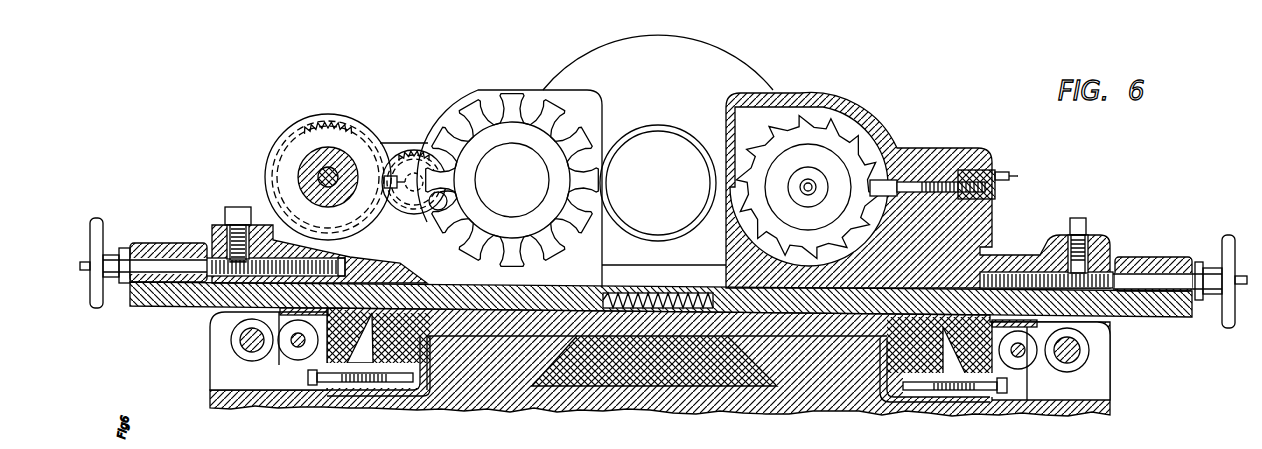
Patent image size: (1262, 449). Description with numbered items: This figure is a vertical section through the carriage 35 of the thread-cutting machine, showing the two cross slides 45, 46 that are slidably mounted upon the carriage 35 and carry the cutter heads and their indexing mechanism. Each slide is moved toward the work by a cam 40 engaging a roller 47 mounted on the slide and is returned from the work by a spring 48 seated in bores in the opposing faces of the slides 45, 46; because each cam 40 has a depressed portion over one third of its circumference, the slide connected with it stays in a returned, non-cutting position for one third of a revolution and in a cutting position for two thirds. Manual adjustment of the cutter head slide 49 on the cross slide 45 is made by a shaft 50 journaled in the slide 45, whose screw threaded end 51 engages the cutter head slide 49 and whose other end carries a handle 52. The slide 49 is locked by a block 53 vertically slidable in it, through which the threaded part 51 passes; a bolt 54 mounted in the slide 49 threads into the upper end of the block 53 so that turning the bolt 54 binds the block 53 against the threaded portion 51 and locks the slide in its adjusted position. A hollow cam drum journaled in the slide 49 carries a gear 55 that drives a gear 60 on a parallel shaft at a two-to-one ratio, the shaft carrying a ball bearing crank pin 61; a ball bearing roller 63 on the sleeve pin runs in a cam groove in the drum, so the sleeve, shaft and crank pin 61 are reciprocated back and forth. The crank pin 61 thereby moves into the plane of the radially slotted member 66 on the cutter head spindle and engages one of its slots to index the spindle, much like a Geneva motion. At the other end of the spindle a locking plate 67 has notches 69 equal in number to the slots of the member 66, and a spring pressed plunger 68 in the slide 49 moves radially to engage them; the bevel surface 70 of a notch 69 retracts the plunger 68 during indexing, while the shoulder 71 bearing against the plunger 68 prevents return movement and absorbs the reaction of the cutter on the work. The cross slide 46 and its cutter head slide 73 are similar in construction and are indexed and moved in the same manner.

The carriage 35 is at (607, 394).
The cam 40 is at (232, 348).
The cross slide 45 is at (186, 244).
The cross slide 46 is at (1163, 258).
The roller 47 is at (292, 356).
The spring 48 is at (667, 283).
The cutter head slide 49 is at (259, 225).
The shaft 50 is at (152, 262).
The screw threaded end 51 is at (345, 262).
The handle 52 is at (99, 308).
The block 53 is at (233, 226).
The bolt 54 is at (239, 206).
The gear 55 is at (301, 143).
The gear 60 is at (421, 175).
The ball bearing crank pin 61 is at (436, 209).
The ball bearing roller 63 is at (385, 178).
The radially slotted member 66 is at (473, 112).
The locking plate 67 is at (831, 126).
The spring pressed plunger 68 is at (928, 172).
The notches 69 is at (779, 133).
The bevel surface 70 is at (883, 152).
The shoulder 71 is at (906, 168).
The cutter head slide 73 is at (1016, 254).